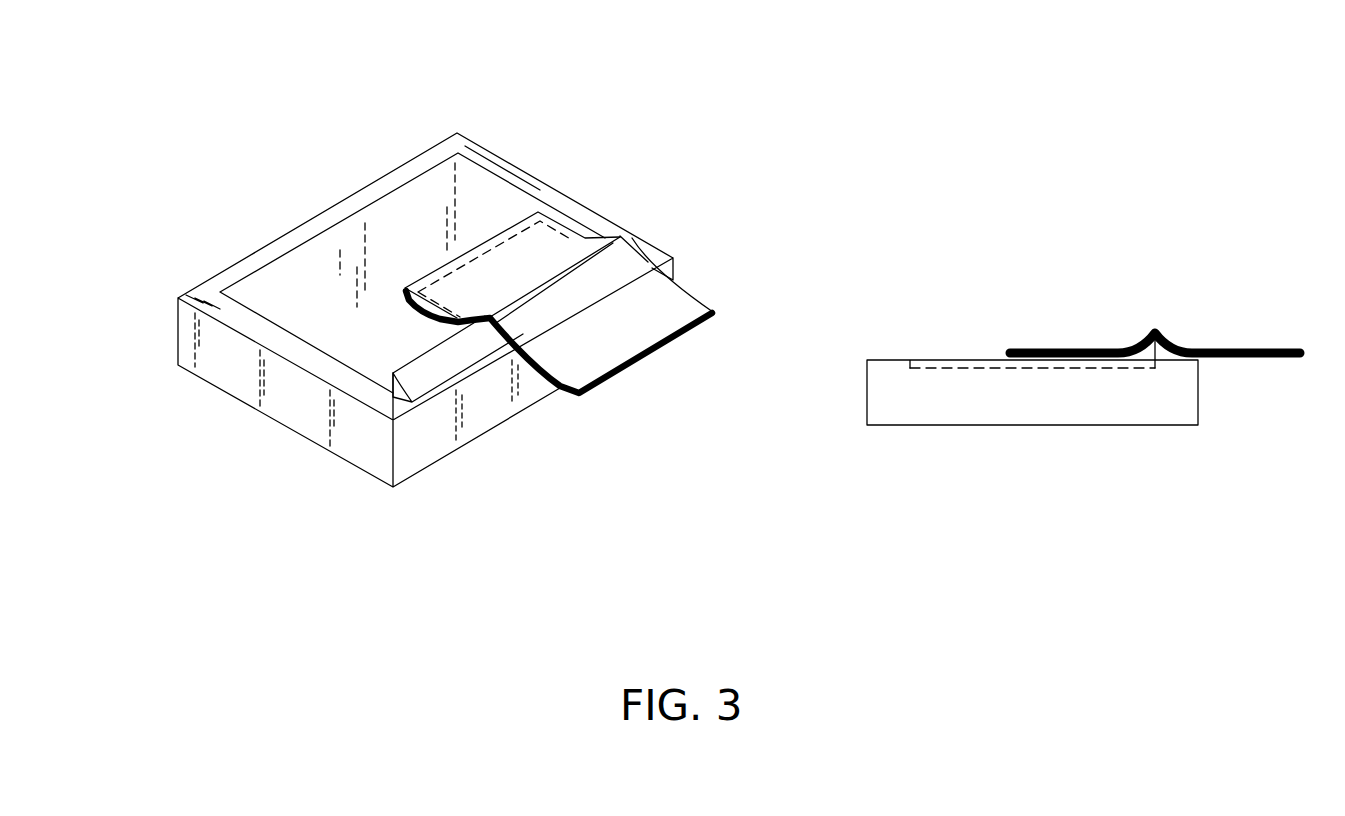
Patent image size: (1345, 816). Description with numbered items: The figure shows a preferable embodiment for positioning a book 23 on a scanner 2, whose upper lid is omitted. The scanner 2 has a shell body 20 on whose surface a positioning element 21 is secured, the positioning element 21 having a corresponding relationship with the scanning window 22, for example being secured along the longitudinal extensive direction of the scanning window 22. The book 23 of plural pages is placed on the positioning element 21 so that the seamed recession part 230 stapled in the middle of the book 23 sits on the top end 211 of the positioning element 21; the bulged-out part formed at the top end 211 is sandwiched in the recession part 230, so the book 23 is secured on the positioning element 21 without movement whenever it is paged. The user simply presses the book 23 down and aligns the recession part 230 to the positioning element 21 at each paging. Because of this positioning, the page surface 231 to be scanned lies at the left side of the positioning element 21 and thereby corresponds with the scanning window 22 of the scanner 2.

The scanner 2 is at (343, 118).
The shell body 20 is at (258, 258).
The positioning element 21 is at (418, 388).
The top end 211 is at (430, 355).
The scanning window 22 is at (417, 207).
The book 23 is at (666, 315).
The seamed recession part 230 is at (463, 327).
The page surface 231 is at (557, 228).